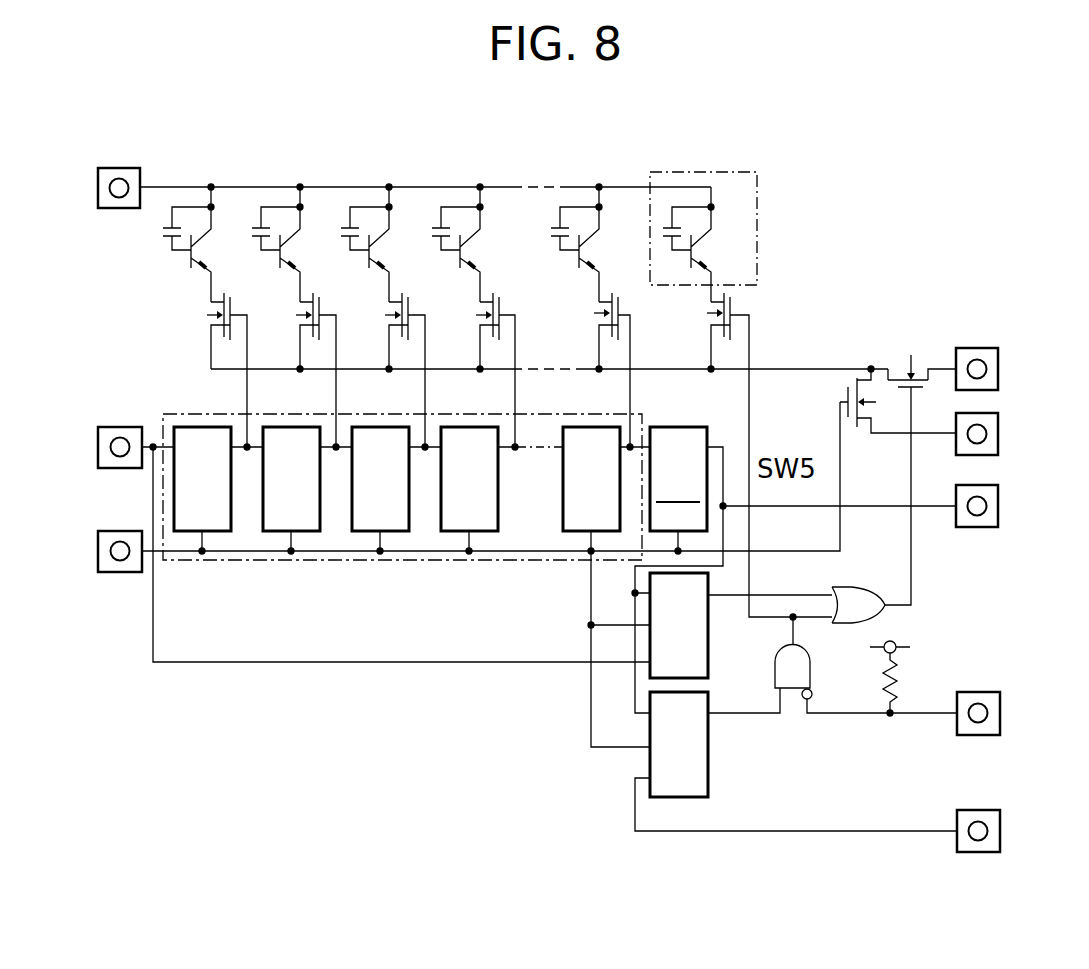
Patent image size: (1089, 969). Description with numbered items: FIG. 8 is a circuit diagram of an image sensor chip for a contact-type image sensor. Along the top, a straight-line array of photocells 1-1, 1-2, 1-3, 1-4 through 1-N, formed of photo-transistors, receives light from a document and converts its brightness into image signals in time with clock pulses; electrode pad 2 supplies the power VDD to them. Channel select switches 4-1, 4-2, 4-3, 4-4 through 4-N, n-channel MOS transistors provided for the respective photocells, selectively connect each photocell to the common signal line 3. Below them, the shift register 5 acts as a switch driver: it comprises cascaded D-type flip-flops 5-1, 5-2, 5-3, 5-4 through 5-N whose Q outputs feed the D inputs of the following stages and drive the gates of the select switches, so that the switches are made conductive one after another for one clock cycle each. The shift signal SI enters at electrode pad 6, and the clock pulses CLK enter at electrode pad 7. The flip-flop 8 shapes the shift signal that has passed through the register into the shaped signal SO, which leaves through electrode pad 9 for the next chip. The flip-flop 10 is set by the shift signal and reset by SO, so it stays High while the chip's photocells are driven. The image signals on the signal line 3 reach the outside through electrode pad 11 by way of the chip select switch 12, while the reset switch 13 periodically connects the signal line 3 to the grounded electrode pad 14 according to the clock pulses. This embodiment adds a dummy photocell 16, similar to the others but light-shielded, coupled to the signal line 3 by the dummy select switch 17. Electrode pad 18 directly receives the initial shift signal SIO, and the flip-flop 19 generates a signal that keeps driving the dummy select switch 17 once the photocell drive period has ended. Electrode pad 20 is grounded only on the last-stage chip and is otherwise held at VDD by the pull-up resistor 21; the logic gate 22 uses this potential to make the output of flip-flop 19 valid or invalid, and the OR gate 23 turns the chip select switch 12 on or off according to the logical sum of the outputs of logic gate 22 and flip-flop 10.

The photocell 1-1 is at (220, 205).
The photocell 1-2 is at (312, 223).
The photocell 1-3 is at (395, 243).
The photocell 1-4 is at (483, 247).
The photocell 1-N is at (608, 240).
The electrode pad 2 is at (98, 187).
The signal line 3 is at (800, 366).
The channel select switch 4-1 is at (207, 315).
The channel select switch 4-2 is at (296, 315).
The channel select switch 4-3 is at (385, 315).
The channel select switch 4-4 is at (476, 315).
The channel select switch 4-N is at (627, 305).
The shift register 5 is at (196, 412).
The D-type flip-flop 5-1 is at (217, 531).
The D-type flip-flop 5-2 is at (306, 531).
The D-type flip-flop 5-3 is at (395, 531).
The D-type flip-flop 5-4 is at (484, 531).
The D-type flip-flop 5-N is at (560, 492).
The electrode pad 6 is at (98, 447).
The electrode pad 7 is at (98, 551).
The flip-flop 8 is at (682, 423).
The electrode pad 9 is at (998, 506).
The flip-flop 10 is at (708, 628).
The electrode pad 11 is at (998, 369).
The chip select switch 12 is at (911, 344).
The reset switch 13 is at (848, 388).
The electrode pad 14 is at (998, 434).
The dummy photocell 16 is at (757, 218).
The dummy select switch 17 is at (745, 303).
The electrode pad 18 is at (957, 843).
The flip-flop 19 is at (708, 748).
The electrode pad 20 is at (957, 730).
The pull-up resistor 21 is at (907, 682).
The logic gate 22 is at (810, 670).
The OR gate 23 is at (885, 612).